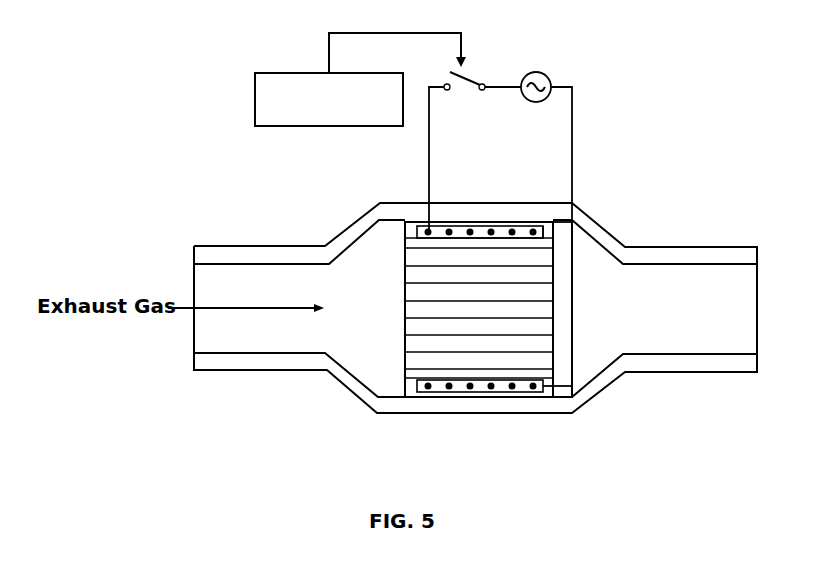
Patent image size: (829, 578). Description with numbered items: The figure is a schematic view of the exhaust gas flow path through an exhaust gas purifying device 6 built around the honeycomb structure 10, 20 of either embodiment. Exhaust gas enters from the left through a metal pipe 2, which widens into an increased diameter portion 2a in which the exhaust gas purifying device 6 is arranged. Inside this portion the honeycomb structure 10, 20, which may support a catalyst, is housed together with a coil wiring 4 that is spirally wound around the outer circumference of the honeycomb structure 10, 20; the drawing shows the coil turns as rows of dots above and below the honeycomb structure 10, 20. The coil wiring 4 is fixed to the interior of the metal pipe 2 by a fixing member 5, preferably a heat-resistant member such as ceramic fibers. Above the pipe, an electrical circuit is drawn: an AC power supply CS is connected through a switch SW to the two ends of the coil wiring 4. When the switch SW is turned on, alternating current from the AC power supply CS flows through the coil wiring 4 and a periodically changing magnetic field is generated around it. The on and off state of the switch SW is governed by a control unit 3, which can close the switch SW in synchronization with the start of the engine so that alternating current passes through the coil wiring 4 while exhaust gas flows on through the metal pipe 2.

The metal pipe 2 is at (257, 253).
The increased diameter portion 2a is at (392, 208).
The control unit 3 is at (360, 79).
The coil wiring 4 is at (451, 218).
The fixing member 5 is at (547, 228).
The exhaust gas purifying device 6 is at (386, 273).
The honeycomb structure 10 is at (413, 392).
The honeycomb structure 20 is at (403, 362).
The switch SW is at (475, 138).
The AC power supply CS is at (546, 223).